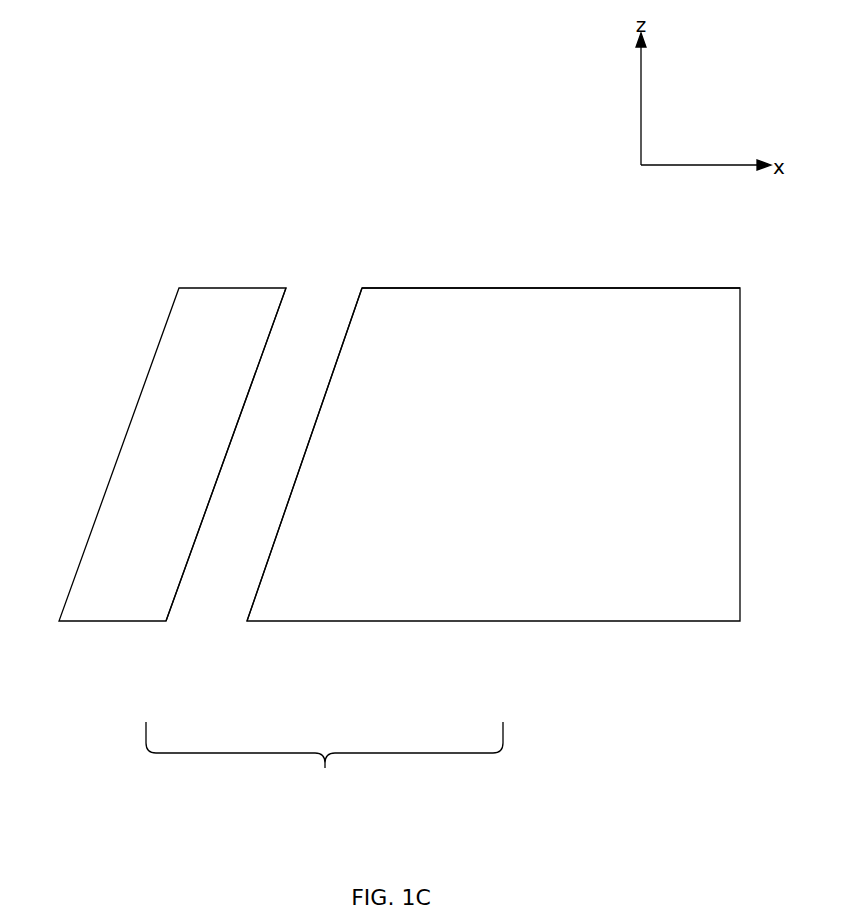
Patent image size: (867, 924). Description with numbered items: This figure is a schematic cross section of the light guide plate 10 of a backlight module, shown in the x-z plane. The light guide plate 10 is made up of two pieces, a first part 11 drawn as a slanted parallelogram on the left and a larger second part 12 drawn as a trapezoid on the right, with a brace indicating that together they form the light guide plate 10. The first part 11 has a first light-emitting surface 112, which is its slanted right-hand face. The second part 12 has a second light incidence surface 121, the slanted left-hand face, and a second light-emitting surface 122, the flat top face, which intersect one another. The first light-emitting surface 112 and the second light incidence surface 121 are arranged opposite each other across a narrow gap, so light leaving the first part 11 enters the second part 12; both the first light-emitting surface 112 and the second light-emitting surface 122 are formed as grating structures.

The light guide plate 10 is at (324, 764).
The first part 11 is at (106, 596).
The first light-emitting surface 112 is at (217, 478).
The second part 12 is at (465, 596).
The second light incidence surface 121 is at (325, 392).
The second light-emitting surface 122 is at (547, 288).